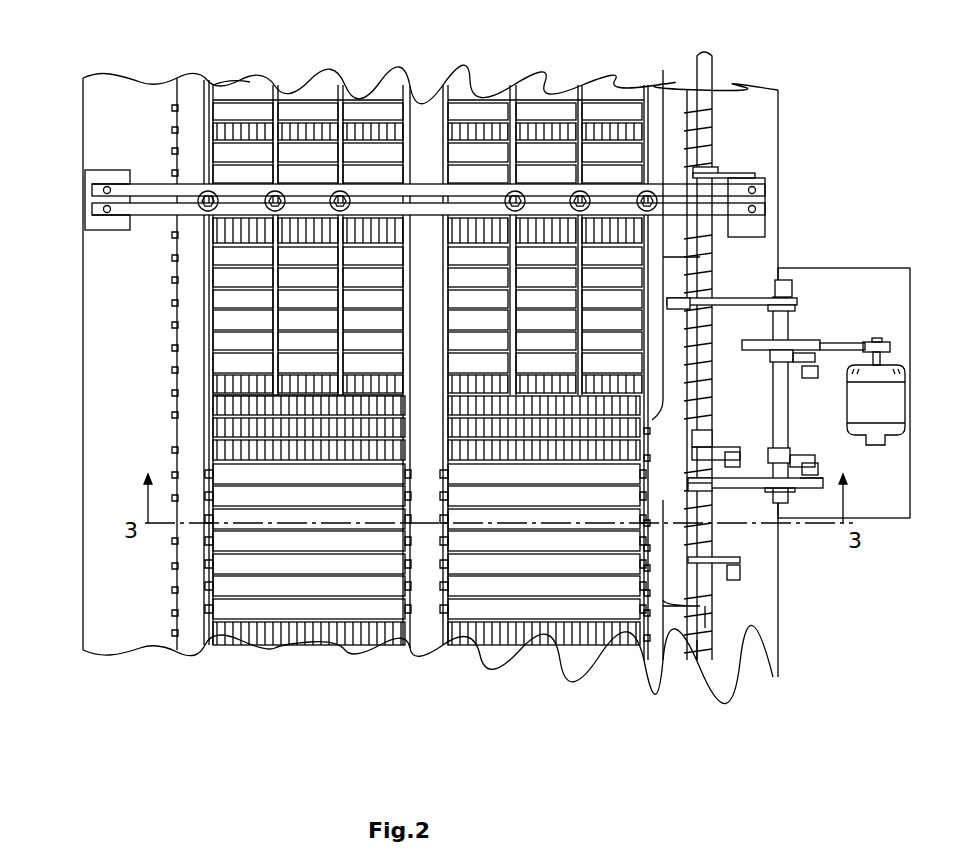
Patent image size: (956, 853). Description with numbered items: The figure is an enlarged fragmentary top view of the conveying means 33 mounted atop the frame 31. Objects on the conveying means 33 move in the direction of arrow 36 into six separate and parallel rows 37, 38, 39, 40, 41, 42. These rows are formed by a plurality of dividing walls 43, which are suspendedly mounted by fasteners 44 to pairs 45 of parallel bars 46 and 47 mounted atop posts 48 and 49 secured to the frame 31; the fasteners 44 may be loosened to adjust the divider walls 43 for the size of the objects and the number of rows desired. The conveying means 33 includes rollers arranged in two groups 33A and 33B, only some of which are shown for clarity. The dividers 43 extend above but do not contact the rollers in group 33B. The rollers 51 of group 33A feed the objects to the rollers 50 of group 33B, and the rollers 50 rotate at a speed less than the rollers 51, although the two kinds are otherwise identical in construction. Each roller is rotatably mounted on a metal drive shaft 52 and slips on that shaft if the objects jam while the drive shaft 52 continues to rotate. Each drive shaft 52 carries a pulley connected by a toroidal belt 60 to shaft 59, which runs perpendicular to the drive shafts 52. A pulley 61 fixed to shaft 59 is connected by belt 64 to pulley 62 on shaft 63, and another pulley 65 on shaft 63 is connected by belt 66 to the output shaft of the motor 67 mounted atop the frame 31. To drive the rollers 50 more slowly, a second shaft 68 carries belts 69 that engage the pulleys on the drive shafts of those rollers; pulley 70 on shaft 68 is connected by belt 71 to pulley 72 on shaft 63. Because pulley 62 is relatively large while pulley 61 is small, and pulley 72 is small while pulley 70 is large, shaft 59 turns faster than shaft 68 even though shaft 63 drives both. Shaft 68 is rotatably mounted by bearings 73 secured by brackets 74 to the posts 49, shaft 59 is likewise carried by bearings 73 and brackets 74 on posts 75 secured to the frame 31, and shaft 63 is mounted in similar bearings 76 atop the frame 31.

The frame 31 is at (93, 473).
The conveying means 33 is at (234, 358).
The roller group 33A is at (700, 606).
The roller group 33B is at (690, 258).
The arrow 36 is at (122, 565).
The row 37 is at (235, 368).
The row 38 is at (332, 488).
The row 39 is at (396, 488).
The row 40 is at (502, 488).
The row 41 is at (568, 488).
The row 42 is at (642, 488).
The dividing wall 43 is at (210, 340).
The fastener 44 is at (340, 203).
The pair of parallel bars 45 is at (74, 184).
The parallel bar 46 is at (160, 182).
The parallel bar 47 is at (150, 205).
The post 48 is at (85, 222).
The post 49 is at (775, 190).
The roller 50 is at (245, 118).
The roller 51 is at (290, 632).
The drive shaft 52 is at (647, 430).
The shaft 59 is at (697, 650).
The belt 60 is at (705, 617).
The pulley 61 is at (715, 490).
The pulley 62 is at (812, 488).
The shaft 63 is at (790, 425).
The belt 64 is at (735, 488).
The pulley 65 is at (760, 352).
The belt 66 is at (835, 350).
The motor 67 is at (883, 410).
The second shaft 68 is at (703, 55).
The belt 69 is at (713, 268).
The pulley 70 is at (735, 296).
The belt 71 is at (797, 300).
The pulley 72 is at (795, 309).
The bearing 73 is at (710, 172).
The bracket 74 is at (745, 173).
The post 75 is at (742, 572).
The bearing 76 is at (785, 455).